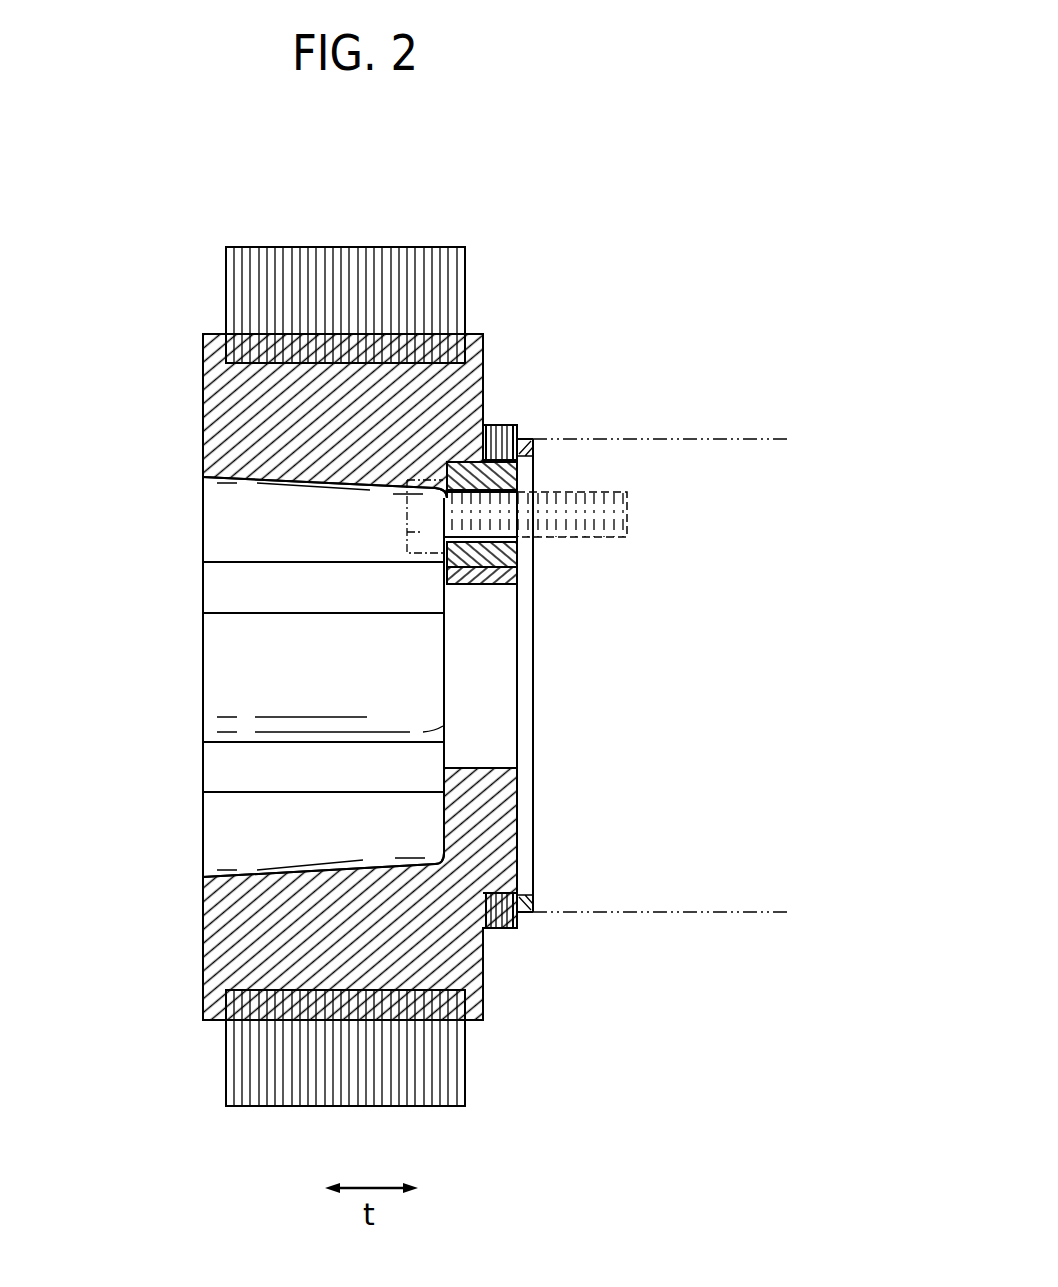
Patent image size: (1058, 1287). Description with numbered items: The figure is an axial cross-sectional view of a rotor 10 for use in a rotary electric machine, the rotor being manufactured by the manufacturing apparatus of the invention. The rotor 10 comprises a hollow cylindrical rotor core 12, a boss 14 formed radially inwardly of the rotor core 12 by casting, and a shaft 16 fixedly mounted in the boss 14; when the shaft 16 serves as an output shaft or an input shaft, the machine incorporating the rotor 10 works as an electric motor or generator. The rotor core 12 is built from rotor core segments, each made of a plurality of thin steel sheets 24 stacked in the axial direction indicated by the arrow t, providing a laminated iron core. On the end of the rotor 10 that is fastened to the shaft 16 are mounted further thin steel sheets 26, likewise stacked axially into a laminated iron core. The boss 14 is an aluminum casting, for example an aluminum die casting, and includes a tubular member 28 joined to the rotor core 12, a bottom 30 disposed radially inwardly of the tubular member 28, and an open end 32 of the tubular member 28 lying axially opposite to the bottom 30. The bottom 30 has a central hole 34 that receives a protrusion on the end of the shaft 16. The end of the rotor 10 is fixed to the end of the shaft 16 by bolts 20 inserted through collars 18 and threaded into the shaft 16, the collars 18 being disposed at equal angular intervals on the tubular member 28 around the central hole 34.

The rotor 10 is at (507, 148).
The rotor core 12 is at (440, 245).
The boss 14 is at (240, 408).
The shaft 16 is at (683, 455).
The collar 18 is at (488, 476).
The bolt 20 is at (407, 535).
The thin steel sheet 24 is at (300, 248).
The thin steel sheet 26 is at (500, 929).
The tubular member 28 is at (243, 453).
The bottom 30 is at (462, 820).
The open end 32 is at (250, 877).
The central hole 34 is at (483, 584).